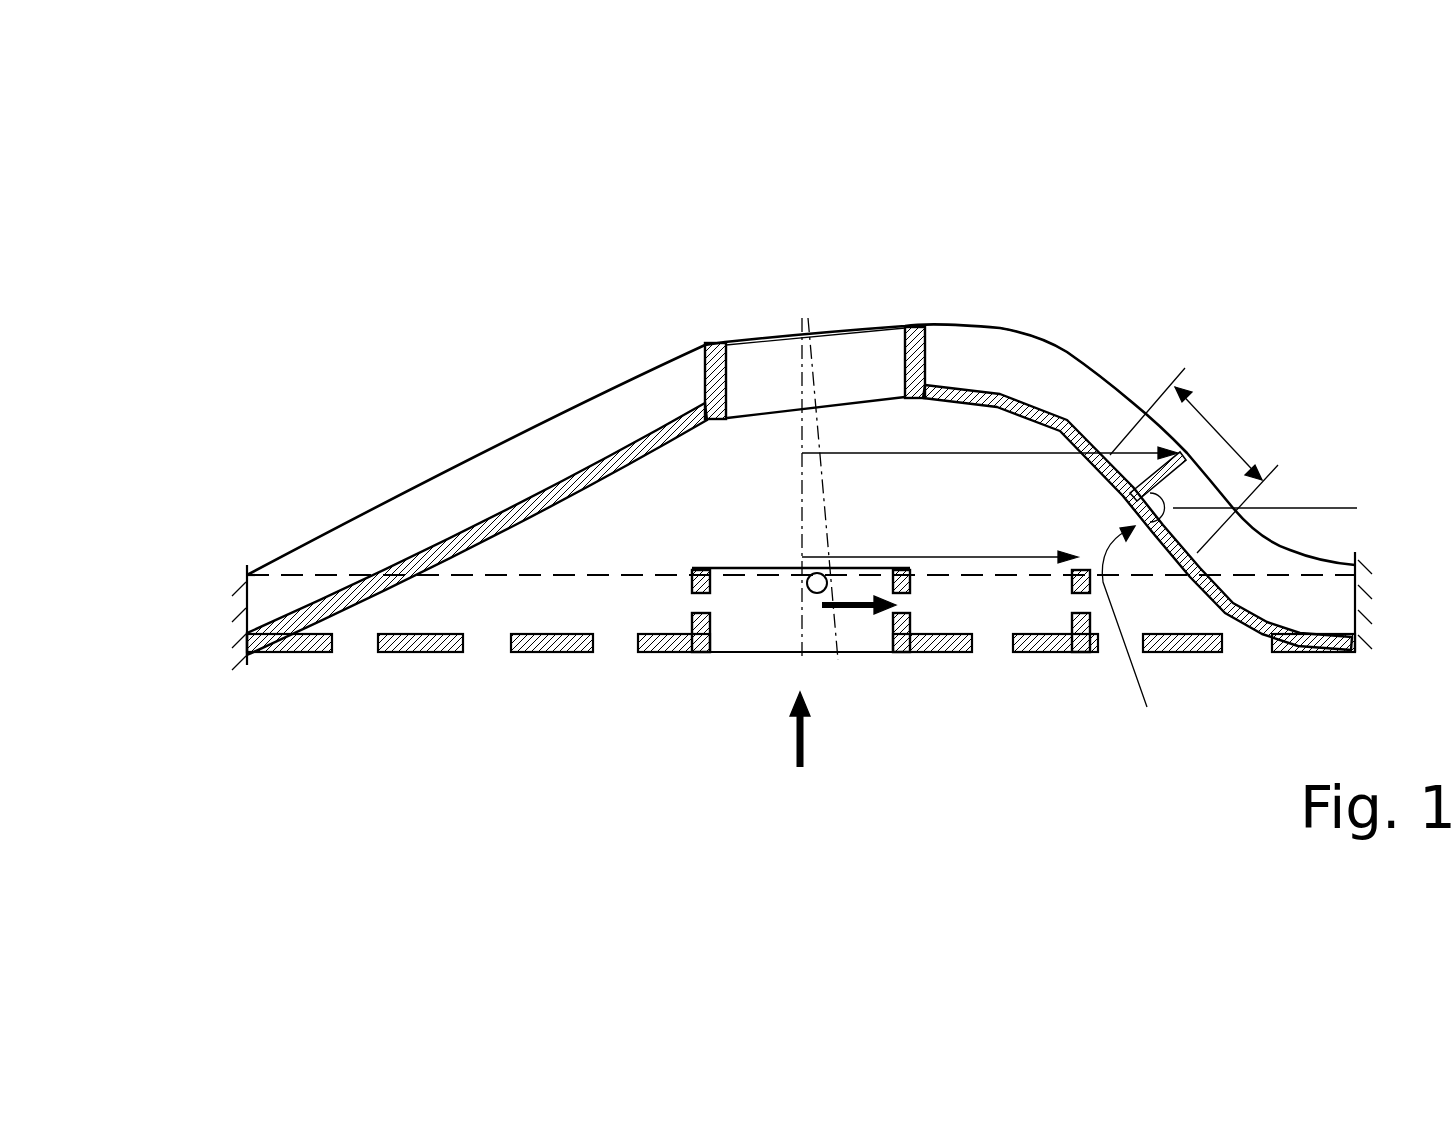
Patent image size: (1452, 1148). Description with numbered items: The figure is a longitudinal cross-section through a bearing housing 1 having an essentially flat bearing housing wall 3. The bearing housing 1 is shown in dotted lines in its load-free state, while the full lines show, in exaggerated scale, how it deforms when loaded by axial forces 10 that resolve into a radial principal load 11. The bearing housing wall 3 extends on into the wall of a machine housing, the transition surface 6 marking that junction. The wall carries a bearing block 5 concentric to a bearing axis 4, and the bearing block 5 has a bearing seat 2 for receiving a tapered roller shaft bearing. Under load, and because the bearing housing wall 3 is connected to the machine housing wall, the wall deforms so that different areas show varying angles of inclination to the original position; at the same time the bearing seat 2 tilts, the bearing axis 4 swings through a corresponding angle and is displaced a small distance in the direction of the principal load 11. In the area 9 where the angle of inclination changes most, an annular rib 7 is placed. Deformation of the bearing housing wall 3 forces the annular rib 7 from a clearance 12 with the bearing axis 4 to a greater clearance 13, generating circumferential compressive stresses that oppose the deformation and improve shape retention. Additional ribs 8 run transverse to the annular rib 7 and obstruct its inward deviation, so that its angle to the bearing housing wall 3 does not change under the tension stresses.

The bearing housing 1 is at (490, 348).
The bearing seat 2 is at (745, 387).
The bearing housing wall 3 is at (990, 388).
The bearing axis 4 is at (822, 592).
The bearing block 5 is at (708, 343).
The transition surface 6 is at (238, 583).
The annular rib 7 is at (1185, 453).
The additional ribs 8 is at (1077, 395).
The area 9 is at (1222, 435).
The axial forces 10 is at (792, 737).
The radial principal load 11 is at (858, 612).
The clearance 12 is at (985, 557).
The greater clearance 13 is at (878, 452).